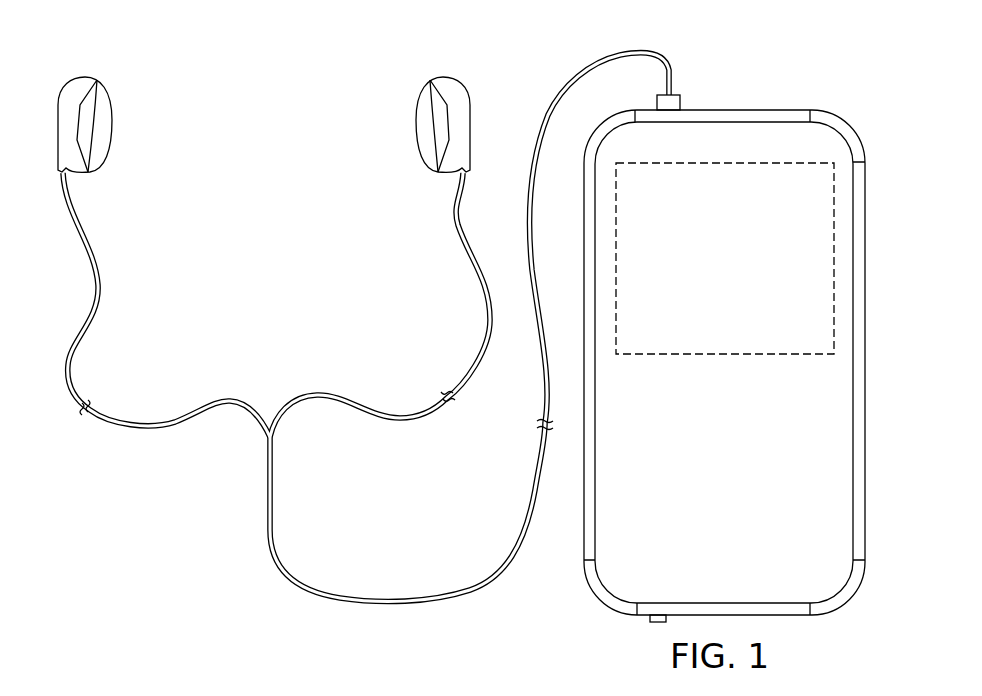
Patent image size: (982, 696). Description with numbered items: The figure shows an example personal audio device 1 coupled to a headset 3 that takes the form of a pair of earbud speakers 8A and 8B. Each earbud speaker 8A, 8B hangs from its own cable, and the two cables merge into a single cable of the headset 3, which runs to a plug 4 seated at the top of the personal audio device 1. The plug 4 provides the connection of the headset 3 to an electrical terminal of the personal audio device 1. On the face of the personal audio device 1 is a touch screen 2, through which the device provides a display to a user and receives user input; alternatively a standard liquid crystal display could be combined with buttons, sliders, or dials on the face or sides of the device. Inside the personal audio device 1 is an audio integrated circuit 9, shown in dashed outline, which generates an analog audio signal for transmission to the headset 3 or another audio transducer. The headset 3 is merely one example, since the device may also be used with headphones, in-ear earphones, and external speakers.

The personal audio device 1 is at (794, 111).
The touch screen 2 is at (729, 508).
The headset 3 is at (222, 398).
The plug 4 is at (681, 103).
The earbud speaker 8A is at (443, 75).
The earbud speaker 8B is at (85, 75).
The audio integrated circuit (IC) 9 is at (743, 356).